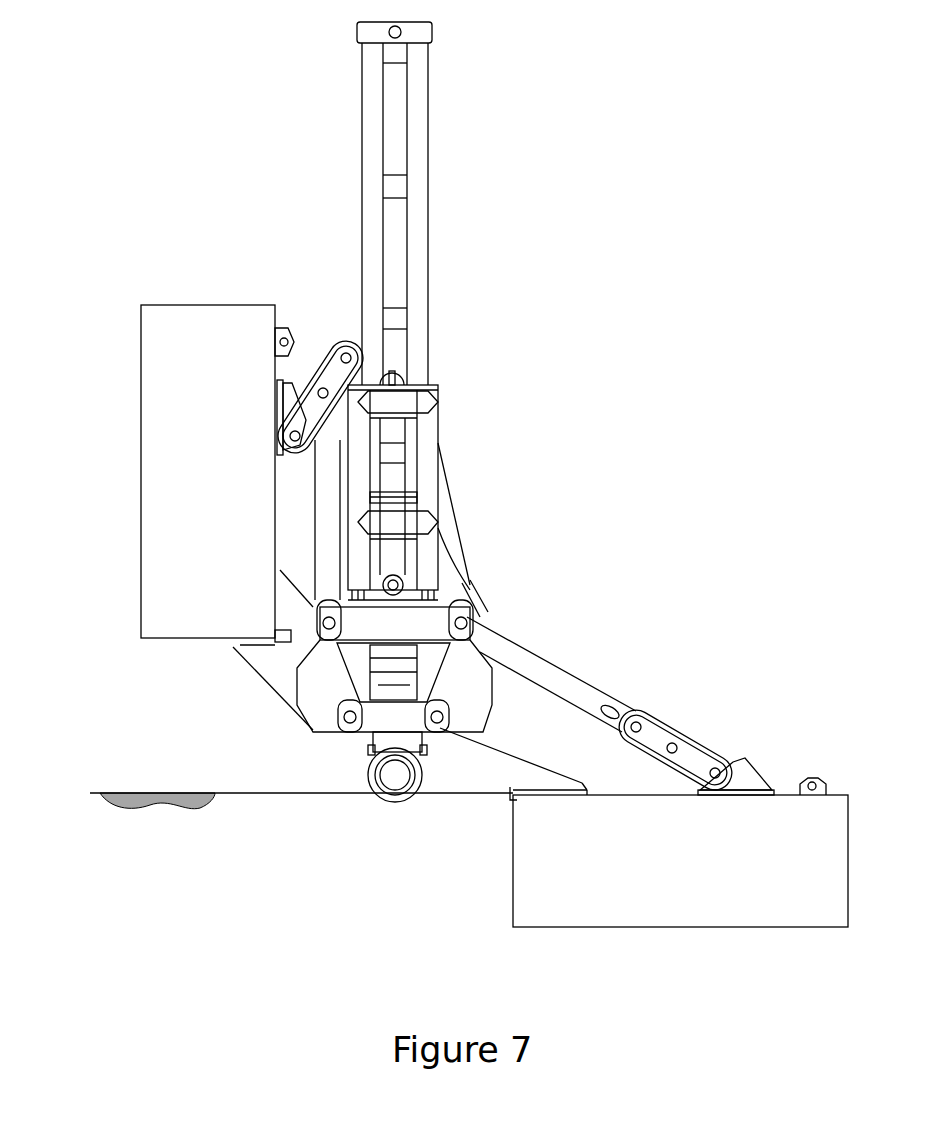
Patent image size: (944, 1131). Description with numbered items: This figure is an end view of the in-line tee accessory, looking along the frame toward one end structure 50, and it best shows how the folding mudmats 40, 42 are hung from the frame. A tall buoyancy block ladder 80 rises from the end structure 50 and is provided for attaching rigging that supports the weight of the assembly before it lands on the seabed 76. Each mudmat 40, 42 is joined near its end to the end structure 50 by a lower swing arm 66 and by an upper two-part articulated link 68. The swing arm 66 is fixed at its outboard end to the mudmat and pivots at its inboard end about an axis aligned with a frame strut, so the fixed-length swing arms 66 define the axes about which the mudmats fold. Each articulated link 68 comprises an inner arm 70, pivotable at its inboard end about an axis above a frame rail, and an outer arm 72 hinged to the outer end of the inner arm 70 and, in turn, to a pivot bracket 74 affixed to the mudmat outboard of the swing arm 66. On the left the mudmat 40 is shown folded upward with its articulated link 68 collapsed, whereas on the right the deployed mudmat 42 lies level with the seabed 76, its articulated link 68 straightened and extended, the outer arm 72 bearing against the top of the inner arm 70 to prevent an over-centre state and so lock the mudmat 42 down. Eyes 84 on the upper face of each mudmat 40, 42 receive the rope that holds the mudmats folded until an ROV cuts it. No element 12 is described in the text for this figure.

The wheel assembly 12 is at (375, 790).
The mudmat 40 is at (155, 505).
The mudmat 42 is at (745, 900).
The end structure 50 is at (430, 625).
The swing arm 66 is at (275, 672).
The articulated link 68 is at (292, 474).
The inner arm 70 is at (322, 515).
The outer arm 72 is at (330, 365).
The pivot bracket 74 is at (280, 395).
The seabed 76 is at (135, 793).
The buoyancy block ladder 80 is at (417, 157).
The eye 84 is at (280, 340).